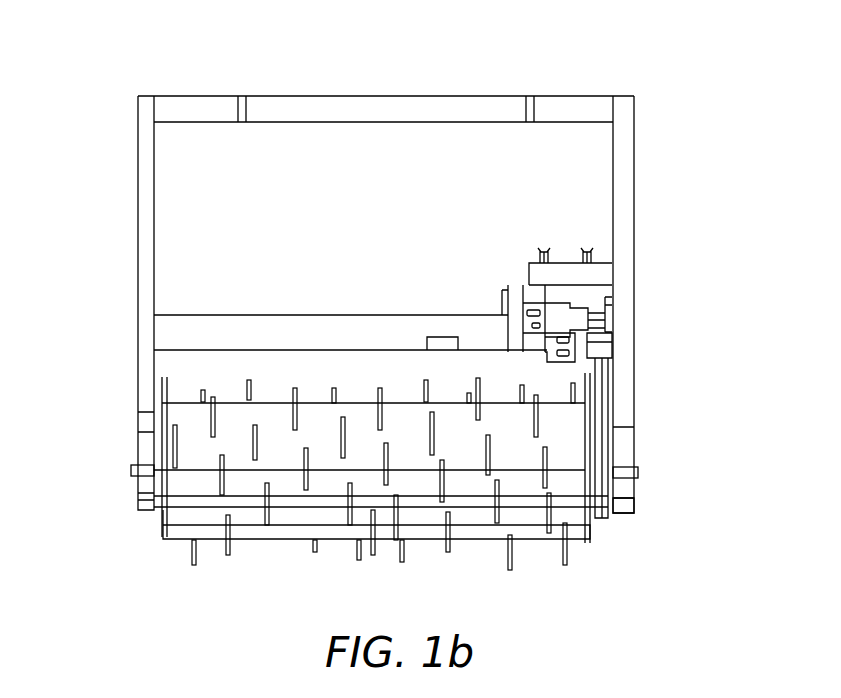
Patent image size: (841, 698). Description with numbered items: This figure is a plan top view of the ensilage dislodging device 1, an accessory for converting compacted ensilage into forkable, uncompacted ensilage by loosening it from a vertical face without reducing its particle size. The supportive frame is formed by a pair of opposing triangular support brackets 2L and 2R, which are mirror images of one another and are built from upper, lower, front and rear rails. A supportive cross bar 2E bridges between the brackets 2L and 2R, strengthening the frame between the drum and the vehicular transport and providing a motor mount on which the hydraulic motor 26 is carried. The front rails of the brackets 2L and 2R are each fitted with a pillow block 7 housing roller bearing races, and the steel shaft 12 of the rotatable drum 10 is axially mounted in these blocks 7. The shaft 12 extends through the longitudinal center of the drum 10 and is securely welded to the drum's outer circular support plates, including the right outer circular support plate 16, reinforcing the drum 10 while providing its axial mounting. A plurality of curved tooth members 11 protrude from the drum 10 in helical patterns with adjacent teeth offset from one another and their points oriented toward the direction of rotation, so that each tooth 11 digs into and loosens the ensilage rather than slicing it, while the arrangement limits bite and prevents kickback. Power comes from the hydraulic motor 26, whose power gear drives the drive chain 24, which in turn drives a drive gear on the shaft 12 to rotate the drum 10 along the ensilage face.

The ensilage dislodging device 1 is at (673, 141).
The right triangular support bracket 2R is at (146, 142).
The left triangular support bracket 2L is at (625, 218).
The supportive cross bar 2E is at (385, 325).
The hydraulic motor 26 is at (528, 290).
The drive chain 24 is at (608, 405).
The shaft 12 is at (131, 466).
The pillow block 7 is at (626, 505).
The right outer circular support plate 16 is at (160, 517).
The curved tooth members 11 is at (195, 562).
The rotatable drum 10 is at (475, 522).